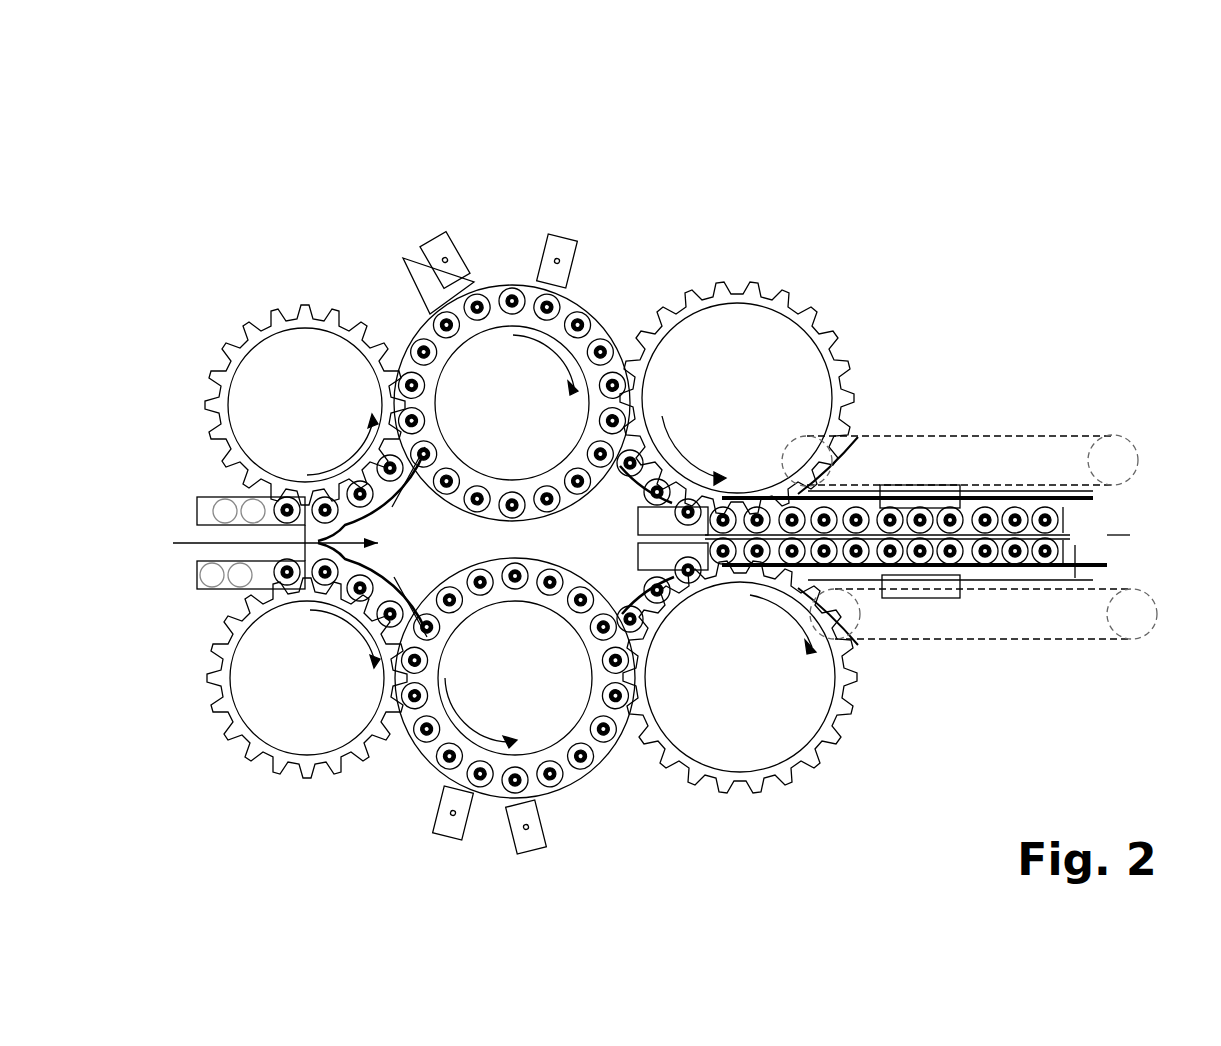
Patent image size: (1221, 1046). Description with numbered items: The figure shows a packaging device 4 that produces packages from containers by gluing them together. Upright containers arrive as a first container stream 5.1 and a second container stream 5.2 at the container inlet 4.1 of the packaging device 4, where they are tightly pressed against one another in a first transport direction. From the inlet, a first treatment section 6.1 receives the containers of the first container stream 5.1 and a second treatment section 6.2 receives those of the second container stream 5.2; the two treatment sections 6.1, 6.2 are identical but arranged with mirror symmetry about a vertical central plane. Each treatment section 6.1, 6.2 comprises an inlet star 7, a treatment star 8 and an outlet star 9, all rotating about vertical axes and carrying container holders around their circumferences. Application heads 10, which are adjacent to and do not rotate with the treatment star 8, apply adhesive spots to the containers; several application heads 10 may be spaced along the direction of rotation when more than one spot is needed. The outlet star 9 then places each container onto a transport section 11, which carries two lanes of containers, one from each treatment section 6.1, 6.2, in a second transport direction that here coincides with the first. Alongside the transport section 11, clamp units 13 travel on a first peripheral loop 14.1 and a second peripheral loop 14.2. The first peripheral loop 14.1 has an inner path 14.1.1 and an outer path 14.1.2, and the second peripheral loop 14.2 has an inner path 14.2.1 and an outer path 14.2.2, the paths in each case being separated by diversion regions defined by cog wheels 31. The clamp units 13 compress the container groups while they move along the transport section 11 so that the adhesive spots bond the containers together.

The packaging device 4 is at (920, 352).
The container inlet 4.1 is at (185, 615).
The first container stream 5.1 is at (222, 508).
The second container stream 5.2 is at (210, 578).
The first treatment section 6.1 is at (478, 210).
The second treatment section 6.2 is at (650, 790).
The inlet star 7 is at (315, 360).
The treatment star 8 is at (555, 360).
The outlet star 9 is at (770, 330).
The application head 10 is at (442, 258).
The transport section 11 is at (1087, 548).
The clamp unit 13 is at (947, 490).
The first peripheral loop 14.1 is at (1022, 420).
The inner path 14.1.1 is at (850, 480).
The outer path 14.1.2 is at (1038, 433).
The second peripheral loop 14.2 is at (1070, 662).
The inner path 14.2.1 is at (1025, 595).
The outer path 14.2.2 is at (960, 640).
The cog wheel 31 is at (1133, 595).